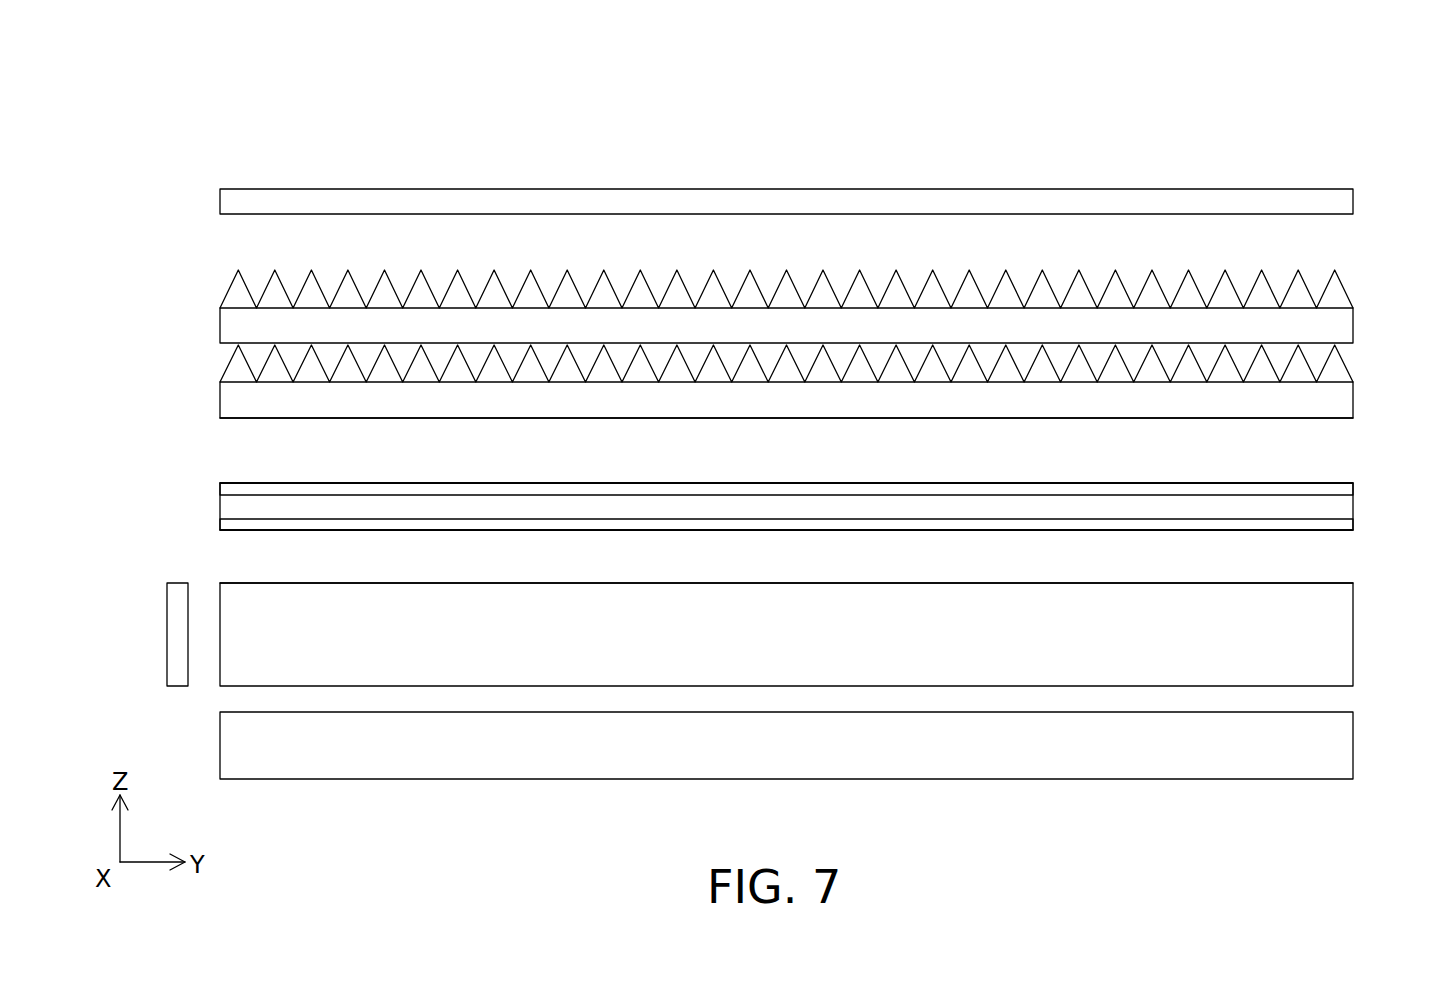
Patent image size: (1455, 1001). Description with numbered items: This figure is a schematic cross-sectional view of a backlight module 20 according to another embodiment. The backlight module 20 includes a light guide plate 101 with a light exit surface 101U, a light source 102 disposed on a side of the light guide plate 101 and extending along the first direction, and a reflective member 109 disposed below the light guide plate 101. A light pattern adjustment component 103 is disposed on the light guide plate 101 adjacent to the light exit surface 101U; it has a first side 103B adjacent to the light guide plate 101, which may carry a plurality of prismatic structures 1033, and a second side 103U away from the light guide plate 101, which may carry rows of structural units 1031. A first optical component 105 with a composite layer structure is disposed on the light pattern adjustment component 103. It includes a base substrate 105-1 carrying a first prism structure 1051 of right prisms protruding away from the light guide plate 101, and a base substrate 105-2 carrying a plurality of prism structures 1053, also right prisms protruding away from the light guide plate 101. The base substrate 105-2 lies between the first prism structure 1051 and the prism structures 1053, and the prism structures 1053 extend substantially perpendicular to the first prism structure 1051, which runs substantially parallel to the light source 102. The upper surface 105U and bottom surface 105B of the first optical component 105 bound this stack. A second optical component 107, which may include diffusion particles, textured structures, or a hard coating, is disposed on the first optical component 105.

The backlight module 20 is at (187, 88).
The second optical component 107 is at (1369, 200).
The first optical component 105 is at (208, 272).
The base substrate 105-1 is at (782, 404).
The base substrate 105-2 is at (835, 306).
The prism structures 1053 is at (1338, 293).
The first prism structure 1051 is at (832, 400).
The upper surface of first optical film 105U is at (1338, 378).
The bottom surface of first optical film 105B is at (1340, 418).
The light pattern adjustment component 103 is at (837, 507).
The structural units 1031 is at (1218, 488).
The prismatic structures 1033 is at (1218, 523).
The second side 103U is at (1338, 483).
The first side 103B is at (1338, 530).
The light guide plate 101 is at (836, 628).
The light exit surface 101U is at (1338, 583).
The light source 102 is at (167, 618).
The reflective member 109 is at (1345, 742).